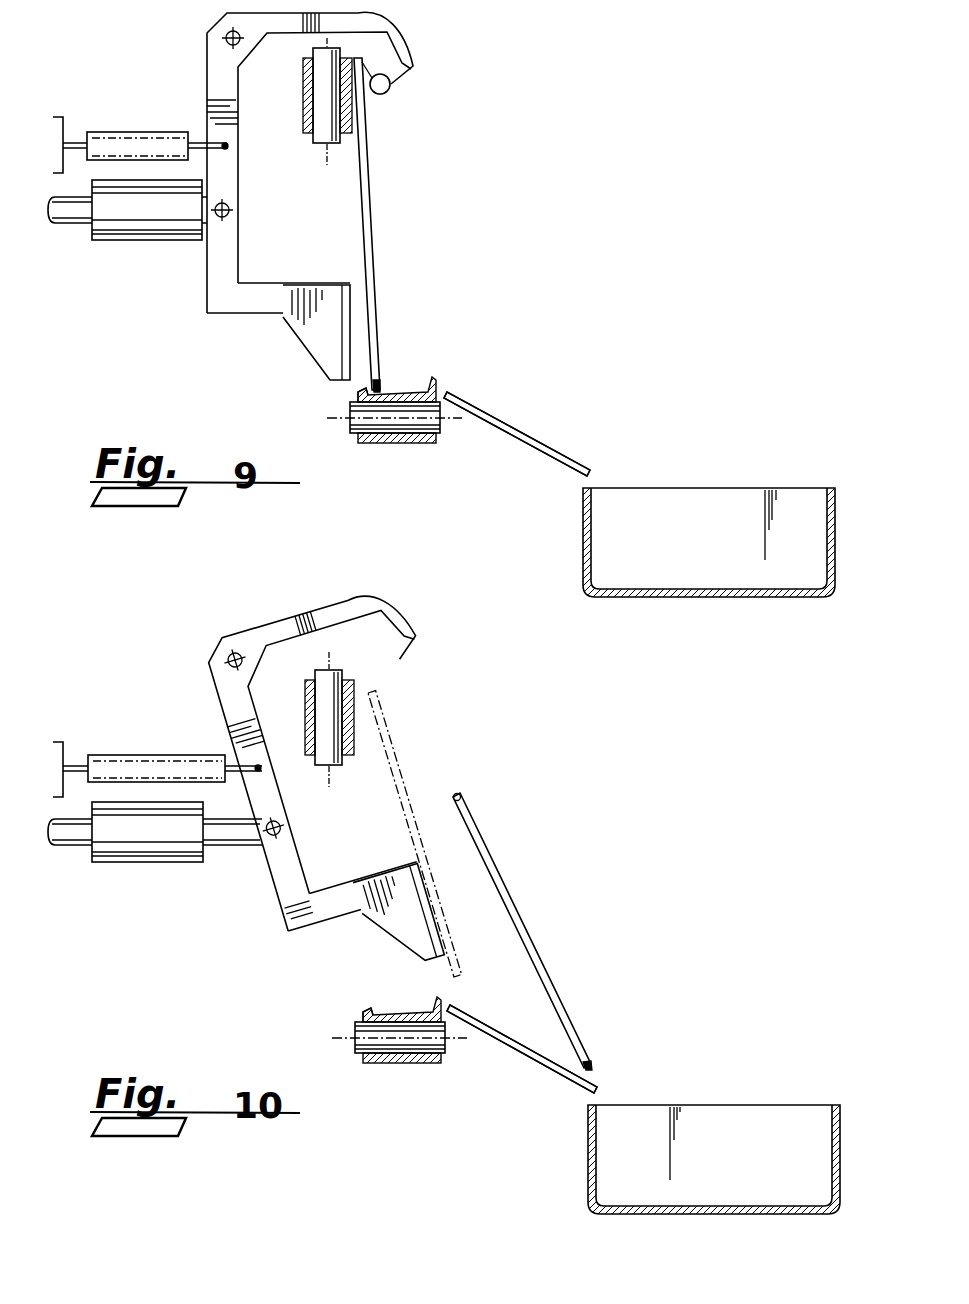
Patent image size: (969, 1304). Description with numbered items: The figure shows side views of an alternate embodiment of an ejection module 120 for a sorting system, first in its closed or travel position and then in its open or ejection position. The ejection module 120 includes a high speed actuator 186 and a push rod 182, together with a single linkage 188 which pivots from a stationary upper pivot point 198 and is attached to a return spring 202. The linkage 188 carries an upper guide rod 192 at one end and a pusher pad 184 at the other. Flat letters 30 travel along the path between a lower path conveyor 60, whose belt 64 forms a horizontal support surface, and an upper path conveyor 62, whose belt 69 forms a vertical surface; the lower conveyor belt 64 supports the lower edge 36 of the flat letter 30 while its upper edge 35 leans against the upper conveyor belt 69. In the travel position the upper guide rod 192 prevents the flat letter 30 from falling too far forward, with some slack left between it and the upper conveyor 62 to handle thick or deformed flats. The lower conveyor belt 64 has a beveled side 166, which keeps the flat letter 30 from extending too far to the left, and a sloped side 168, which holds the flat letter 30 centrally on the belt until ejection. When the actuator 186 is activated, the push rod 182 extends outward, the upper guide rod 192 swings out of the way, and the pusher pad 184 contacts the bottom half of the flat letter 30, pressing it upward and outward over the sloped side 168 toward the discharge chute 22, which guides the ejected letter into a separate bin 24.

In FIG. 9, the discharge chute 22 is at (540, 440).
In FIG. 10, the discharge chute 22 is at (540, 1067).
In FIG. 9, the bin 24 is at (703, 597).
In FIG. 10, the bin 24 is at (743, 1100).
In FIG. 9, the flat letter 30 is at (373, 243).
In FIG. 10, the flat letter 30 is at (407, 773).
In FIG. 9, the upper edge 35 is at (389, 92).
In FIG. 10, the upper edge 35 is at (463, 808).
In FIG. 9, the lower edge 36 is at (377, 381).
In FIG. 10, the lower edge 36 is at (593, 1052).
In FIG. 9, the lower path conveyor 60 is at (352, 449).
In FIG. 10, the lower path conveyor 60 is at (349, 1062).
In FIG. 9, the upper path conveyor 62 is at (289, 111).
In FIG. 9, the lower conveyor belt 64 is at (387, 388).
In FIG. 10, the lower conveyor belt 64 is at (403, 1007).
In FIG. 9, the upper conveyor belt 69 is at (352, 58).
In FIG. 10, the upper conveyor belt 69 is at (357, 677).
In FIG. 9, the ejection module 120 is at (463, 191).
In FIG. 10, the ejection module 120 is at (512, 779).
In FIG. 9, the beveled side 166 is at (362, 390).
In FIG. 10, the beveled side 166 is at (363, 1003).
In FIG. 9, the sloped side 168 is at (433, 381).
In FIG. 10, the sloped side 168 is at (440, 1003).
In FIG. 9, the push rod 182 is at (63, 228).
In FIG. 10, the push rod 182 is at (75, 845).
In FIG. 9, the pusher pad 184 is at (340, 283).
In FIG. 10, the pusher pad 184 is at (393, 883).
In FIG. 9, the high speed actuator 186 is at (118, 242).
In FIG. 10, the high speed actuator 186 is at (150, 863).
In FIG. 9, the linkage 188 is at (390, 29).
In FIG. 10, the linkage 188 is at (343, 610).
In FIG. 9, the upper guide rod 192 is at (386, 93).
In FIG. 10, the upper guide rod 192 is at (397, 687).
In FIG. 9, the upper pivot point 198 is at (232, 33).
In FIG. 10, the upper pivot point 198 is at (235, 659).
In FIG. 9, the return spring 202 is at (137, 132).
In FIG. 10, the return spring 202 is at (140, 763).